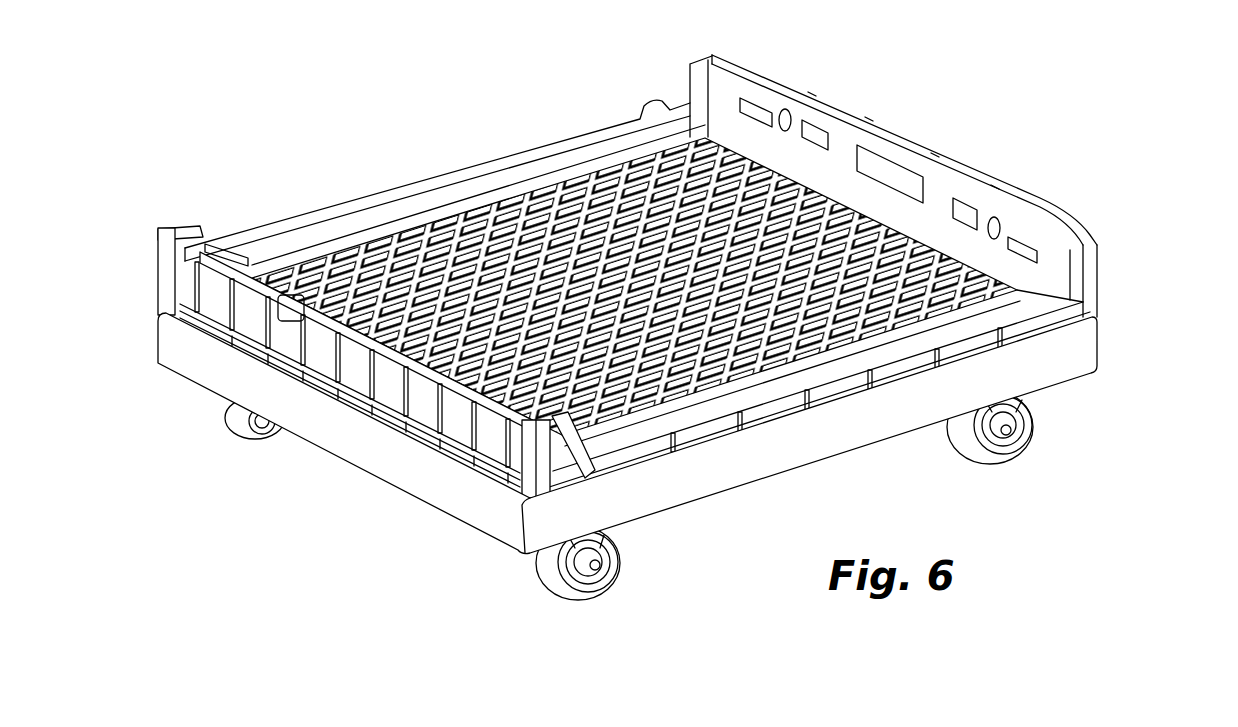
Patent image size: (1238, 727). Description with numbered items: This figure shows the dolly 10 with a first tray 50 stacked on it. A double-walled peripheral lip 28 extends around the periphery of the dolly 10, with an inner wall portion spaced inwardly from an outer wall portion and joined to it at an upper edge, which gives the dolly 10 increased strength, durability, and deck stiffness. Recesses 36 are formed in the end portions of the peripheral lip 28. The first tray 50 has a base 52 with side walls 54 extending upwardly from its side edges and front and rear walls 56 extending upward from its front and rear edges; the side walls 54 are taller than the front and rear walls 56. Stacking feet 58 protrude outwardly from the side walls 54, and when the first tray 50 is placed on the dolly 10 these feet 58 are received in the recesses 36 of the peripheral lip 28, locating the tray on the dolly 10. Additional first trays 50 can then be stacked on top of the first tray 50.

The dolly 10 is at (658, 308).
The peripheral lip 28 is at (342, 412).
The recesses 36 is at (163, 312).
The first tray 50 is at (1060, 207).
The base 52 is at (550, 258).
The side walls 54 is at (846, 100).
The front and rear walls 56 is at (442, 178).
The stacking feet 58 is at (200, 327).